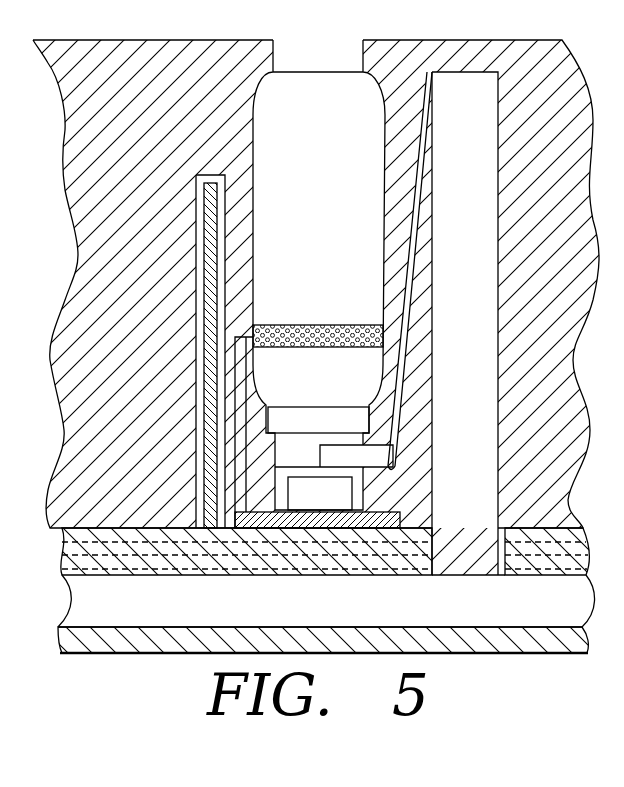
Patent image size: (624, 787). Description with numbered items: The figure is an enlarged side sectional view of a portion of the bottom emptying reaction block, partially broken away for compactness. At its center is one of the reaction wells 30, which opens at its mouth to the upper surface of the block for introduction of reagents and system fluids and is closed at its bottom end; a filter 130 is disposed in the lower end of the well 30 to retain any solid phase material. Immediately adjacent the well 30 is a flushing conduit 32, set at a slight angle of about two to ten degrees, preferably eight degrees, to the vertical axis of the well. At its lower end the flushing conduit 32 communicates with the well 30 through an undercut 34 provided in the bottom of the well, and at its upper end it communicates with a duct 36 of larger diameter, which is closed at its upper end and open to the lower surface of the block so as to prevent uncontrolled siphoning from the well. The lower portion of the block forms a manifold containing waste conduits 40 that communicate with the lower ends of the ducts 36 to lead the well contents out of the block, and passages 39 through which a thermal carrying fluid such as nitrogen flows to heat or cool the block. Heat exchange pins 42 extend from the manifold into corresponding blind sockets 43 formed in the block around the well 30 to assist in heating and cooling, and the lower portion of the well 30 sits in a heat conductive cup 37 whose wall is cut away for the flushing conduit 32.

The well 30 is at (258, 80).
The flushing conduit 32 is at (423, 127).
The undercut 34 is at (335, 478).
The duct 36 is at (498, 268).
The heat conductive cup 37 is at (240, 455).
The passages 39 is at (62, 566).
The waste conduit 40 is at (70, 608).
The heat exchange pin 42 is at (207, 285).
The blind socket 43 is at (197, 238).
The filter 130 is at (315, 324).